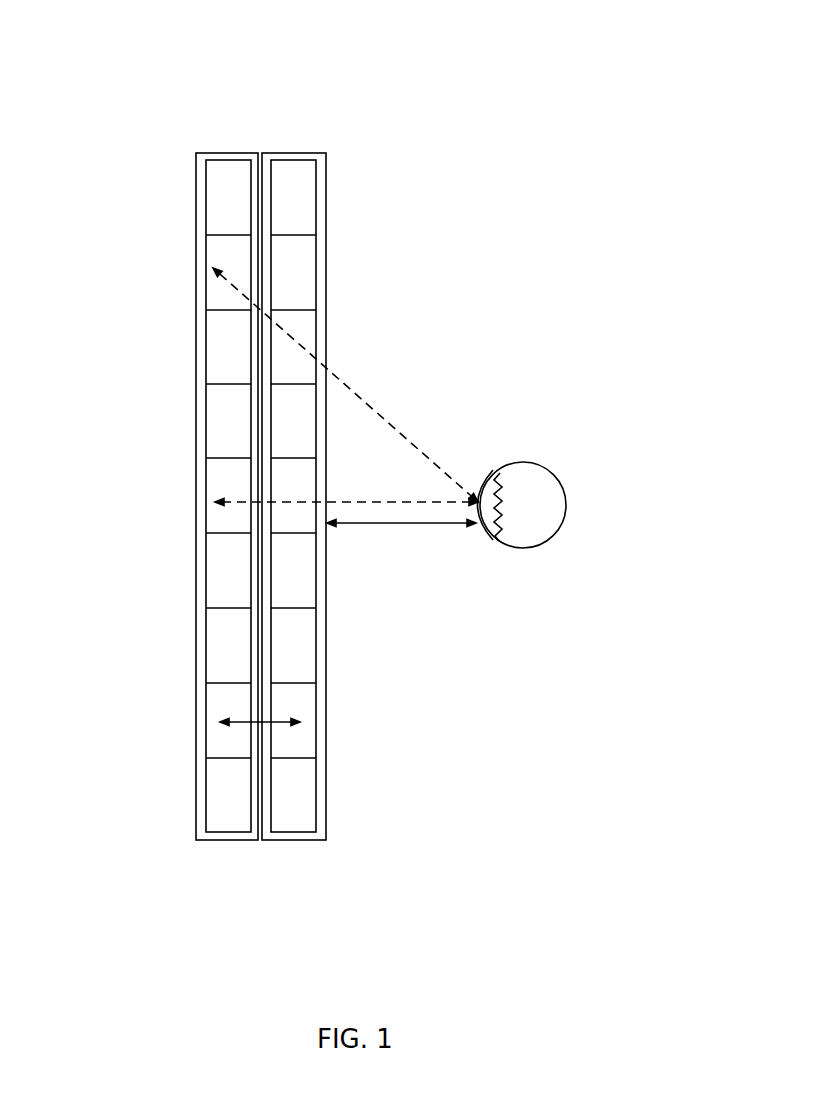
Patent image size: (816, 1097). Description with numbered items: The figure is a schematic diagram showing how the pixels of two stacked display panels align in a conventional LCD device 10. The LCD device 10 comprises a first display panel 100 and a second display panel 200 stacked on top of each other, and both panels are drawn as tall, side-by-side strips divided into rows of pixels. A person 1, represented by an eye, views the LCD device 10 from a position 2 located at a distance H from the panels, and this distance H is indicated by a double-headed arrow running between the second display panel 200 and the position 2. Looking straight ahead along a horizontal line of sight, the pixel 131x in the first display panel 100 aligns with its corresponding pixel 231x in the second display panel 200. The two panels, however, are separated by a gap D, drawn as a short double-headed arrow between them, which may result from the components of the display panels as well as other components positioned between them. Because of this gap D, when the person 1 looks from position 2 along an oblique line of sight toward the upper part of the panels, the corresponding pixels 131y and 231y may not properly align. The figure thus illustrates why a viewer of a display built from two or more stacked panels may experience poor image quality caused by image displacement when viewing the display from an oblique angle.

The LCD device 10 is at (275, 863).
The first display panel 100 is at (298, 152).
The second display panel 200 is at (243, 152).
The pixel 131x is at (295, 522).
The pixel 131y is at (305, 320).
The pixel 231x is at (222, 525).
The pixel 231y is at (228, 330).
The person 1 is at (537, 512).
The position 2 is at (478, 482).
The distance H is at (413, 530).
The gap D is at (280, 727).